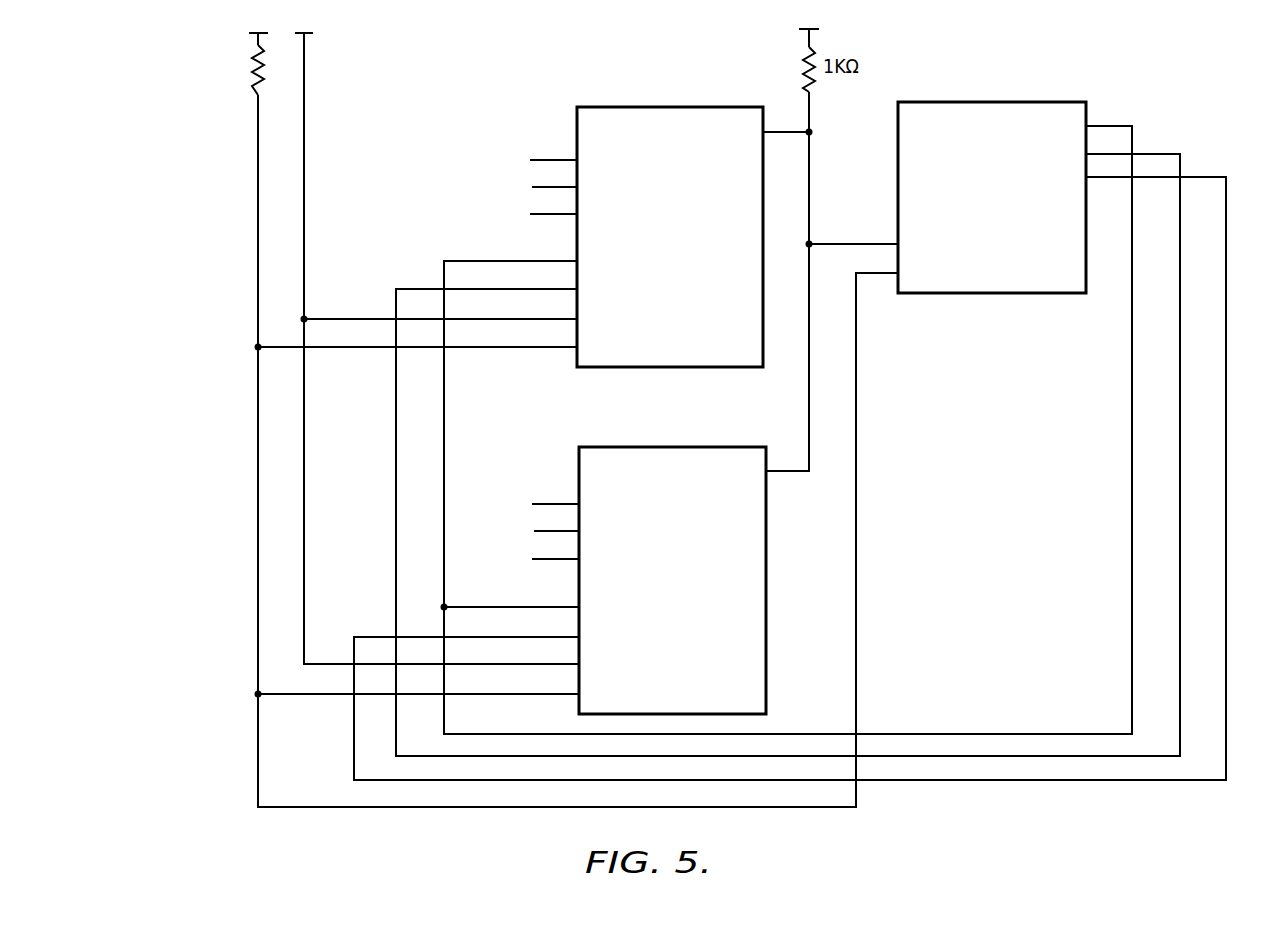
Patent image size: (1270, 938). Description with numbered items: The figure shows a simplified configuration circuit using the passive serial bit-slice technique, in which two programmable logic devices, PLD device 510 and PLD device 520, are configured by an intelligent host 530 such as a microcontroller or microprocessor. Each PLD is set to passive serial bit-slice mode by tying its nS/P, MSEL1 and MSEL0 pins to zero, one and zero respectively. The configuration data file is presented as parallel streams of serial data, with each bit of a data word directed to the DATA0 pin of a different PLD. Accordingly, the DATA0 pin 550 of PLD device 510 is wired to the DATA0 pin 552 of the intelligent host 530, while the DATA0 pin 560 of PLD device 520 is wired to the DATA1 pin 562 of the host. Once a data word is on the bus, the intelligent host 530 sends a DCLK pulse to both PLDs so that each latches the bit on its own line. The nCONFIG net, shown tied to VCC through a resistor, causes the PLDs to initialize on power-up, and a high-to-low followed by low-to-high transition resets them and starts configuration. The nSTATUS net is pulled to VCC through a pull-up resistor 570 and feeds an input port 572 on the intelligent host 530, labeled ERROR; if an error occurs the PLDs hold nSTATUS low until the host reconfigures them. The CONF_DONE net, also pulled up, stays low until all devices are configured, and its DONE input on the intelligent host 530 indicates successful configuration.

The PLD device 510 is at (728, 107).
The PLD device 520 is at (733, 447).
The intelligent host 530 is at (1063, 102).
The DATA0 pin 550 is at (575, 288).
The DATA0 pin 560 is at (578, 637).
The DATA0 pin 552 is at (1088, 152).
The DATA1 pin 562 is at (1088, 180).
The pull-up resistor 570 is at (254, 88).
The input port 572 is at (898, 278).